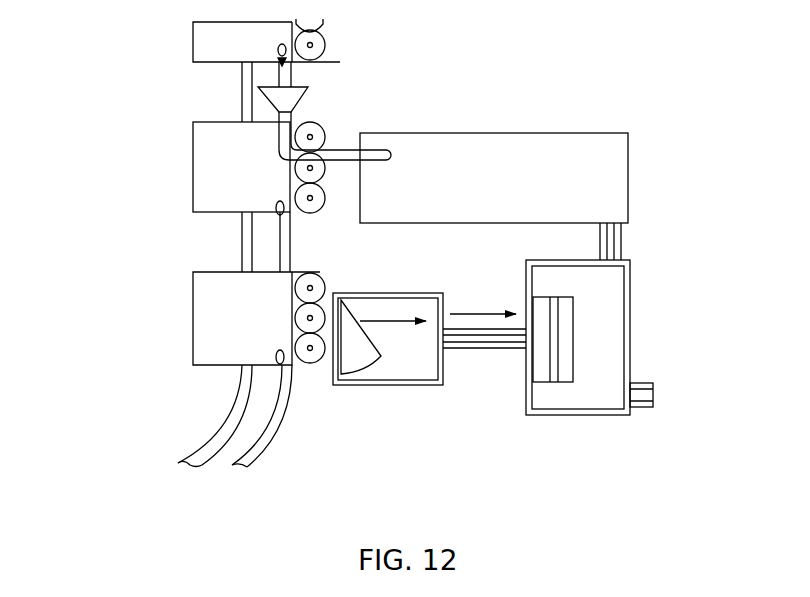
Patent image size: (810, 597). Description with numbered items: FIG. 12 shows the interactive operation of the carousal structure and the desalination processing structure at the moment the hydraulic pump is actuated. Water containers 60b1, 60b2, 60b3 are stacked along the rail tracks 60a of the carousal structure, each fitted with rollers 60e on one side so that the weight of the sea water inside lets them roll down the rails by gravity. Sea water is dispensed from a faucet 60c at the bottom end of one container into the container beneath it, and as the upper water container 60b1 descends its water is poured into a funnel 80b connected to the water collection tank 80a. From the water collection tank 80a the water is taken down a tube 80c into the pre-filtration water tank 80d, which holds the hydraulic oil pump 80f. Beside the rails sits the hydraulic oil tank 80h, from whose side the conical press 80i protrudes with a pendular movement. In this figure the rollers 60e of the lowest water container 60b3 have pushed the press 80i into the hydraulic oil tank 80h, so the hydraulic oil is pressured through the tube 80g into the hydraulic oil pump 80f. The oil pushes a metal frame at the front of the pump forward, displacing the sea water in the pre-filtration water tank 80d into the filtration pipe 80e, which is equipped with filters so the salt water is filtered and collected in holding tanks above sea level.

The rail tracks 60a is at (212, 412).
The water container 60b1 is at (190, 32).
The water container 60b2 is at (191, 176).
The water container 60b3 is at (191, 325).
The faucet 60c is at (276, 52).
The rollers 60e is at (328, 38).
The water collection tank 80a is at (488, 131).
The funnel 80b is at (309, 100).
The tube 80c is at (626, 238).
The pre-filtration water tank 80d is at (634, 322).
The filtration pipe 80e is at (658, 395).
The hydraulic oil pump 80f is at (550, 386).
The tube 80g is at (488, 351).
The hydraulic oil tank 80h is at (388, 395).
The conical press 80i is at (337, 366).